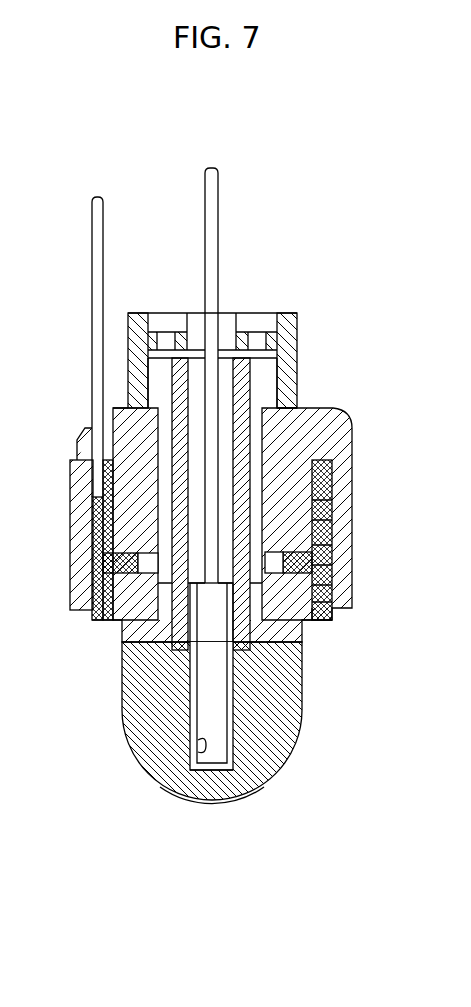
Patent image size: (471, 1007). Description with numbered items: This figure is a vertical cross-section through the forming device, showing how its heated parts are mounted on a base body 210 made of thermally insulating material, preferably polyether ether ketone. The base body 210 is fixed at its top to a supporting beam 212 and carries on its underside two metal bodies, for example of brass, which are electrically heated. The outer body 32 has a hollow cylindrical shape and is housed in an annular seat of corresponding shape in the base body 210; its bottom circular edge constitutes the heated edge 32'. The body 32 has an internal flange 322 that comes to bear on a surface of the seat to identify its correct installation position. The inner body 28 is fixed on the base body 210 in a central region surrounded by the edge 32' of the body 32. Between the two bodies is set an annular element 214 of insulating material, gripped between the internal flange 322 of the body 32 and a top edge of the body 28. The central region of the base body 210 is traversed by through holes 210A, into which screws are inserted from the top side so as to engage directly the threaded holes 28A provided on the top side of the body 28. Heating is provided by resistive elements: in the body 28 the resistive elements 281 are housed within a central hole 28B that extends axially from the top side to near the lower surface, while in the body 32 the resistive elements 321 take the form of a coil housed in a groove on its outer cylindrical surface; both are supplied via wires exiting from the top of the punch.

The supporting beam 212 is at (278, 312).
The through holes 210A is at (165, 368).
The base body 210 is at (336, 424).
The internal flange 322 is at (105, 528).
The resistive elements 321 is at (336, 508).
The heated body 32 is at (256, 540).
The heated edge 32' is at (375, 638).
The annular element 214 is at (124, 630).
The heated body 28 is at (286, 763).
The threaded holes 28A is at (303, 665).
The resistive elements 281 is at (232, 797).
The central hole 28B is at (186, 797).